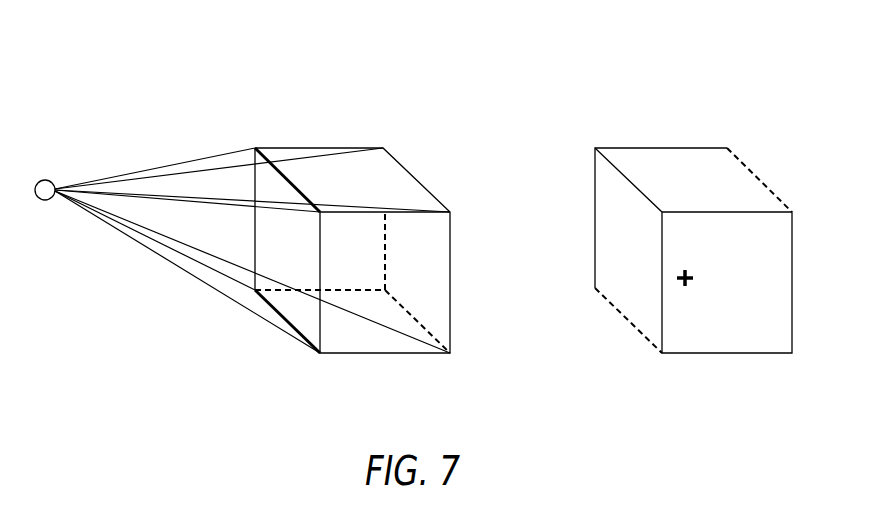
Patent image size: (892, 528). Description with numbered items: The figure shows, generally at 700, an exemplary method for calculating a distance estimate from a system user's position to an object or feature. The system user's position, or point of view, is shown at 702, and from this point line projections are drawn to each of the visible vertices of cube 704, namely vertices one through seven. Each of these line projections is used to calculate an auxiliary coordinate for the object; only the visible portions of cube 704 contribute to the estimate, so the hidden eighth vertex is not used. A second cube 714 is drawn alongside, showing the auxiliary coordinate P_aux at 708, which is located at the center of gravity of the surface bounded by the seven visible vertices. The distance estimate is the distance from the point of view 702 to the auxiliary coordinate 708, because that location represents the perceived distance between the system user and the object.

The calculation of distance estimates 700 is at (505, 80).
The system user's position 702 is at (48, 179).
The cube 704 is at (298, 147).
The cube 714 is at (685, 147).
The auxiliary coordinate 708 is at (690, 288).